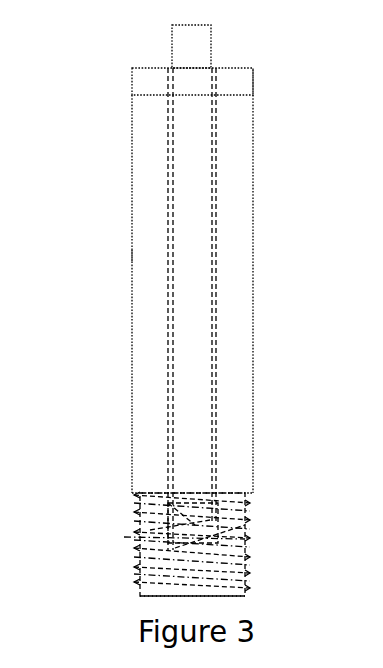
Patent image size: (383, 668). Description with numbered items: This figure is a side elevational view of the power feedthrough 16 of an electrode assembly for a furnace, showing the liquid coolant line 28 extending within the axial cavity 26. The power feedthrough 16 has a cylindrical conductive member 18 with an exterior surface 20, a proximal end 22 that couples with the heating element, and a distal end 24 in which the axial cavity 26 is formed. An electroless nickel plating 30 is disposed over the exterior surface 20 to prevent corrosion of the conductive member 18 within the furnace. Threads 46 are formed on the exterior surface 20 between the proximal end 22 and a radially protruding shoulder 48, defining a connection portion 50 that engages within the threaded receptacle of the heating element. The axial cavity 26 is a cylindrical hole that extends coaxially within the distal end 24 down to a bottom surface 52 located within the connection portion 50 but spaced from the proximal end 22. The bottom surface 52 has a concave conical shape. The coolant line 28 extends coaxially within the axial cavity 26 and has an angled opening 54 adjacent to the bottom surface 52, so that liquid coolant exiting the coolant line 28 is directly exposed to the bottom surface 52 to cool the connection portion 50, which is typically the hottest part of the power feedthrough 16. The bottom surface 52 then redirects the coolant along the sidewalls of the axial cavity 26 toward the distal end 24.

The power feedthrough 16 is at (97, 140).
The conductive member 18 is at (148, 319).
The exterior surface 20 is at (132, 255).
The proximal end 22 is at (222, 594).
The distal end 24 is at (230, 68).
The axial cavity 26 is at (168, 217).
The liquid coolant line 28 is at (185, 48).
The electroless nickel plating 30 is at (253, 82).
The threads 46 is at (135, 563).
The radially protruding shoulder 48 is at (230, 493).
The connection portion 50 is at (100, 548).
The bottom surface 52 is at (245, 539).
The angled opening 54 is at (140, 538).